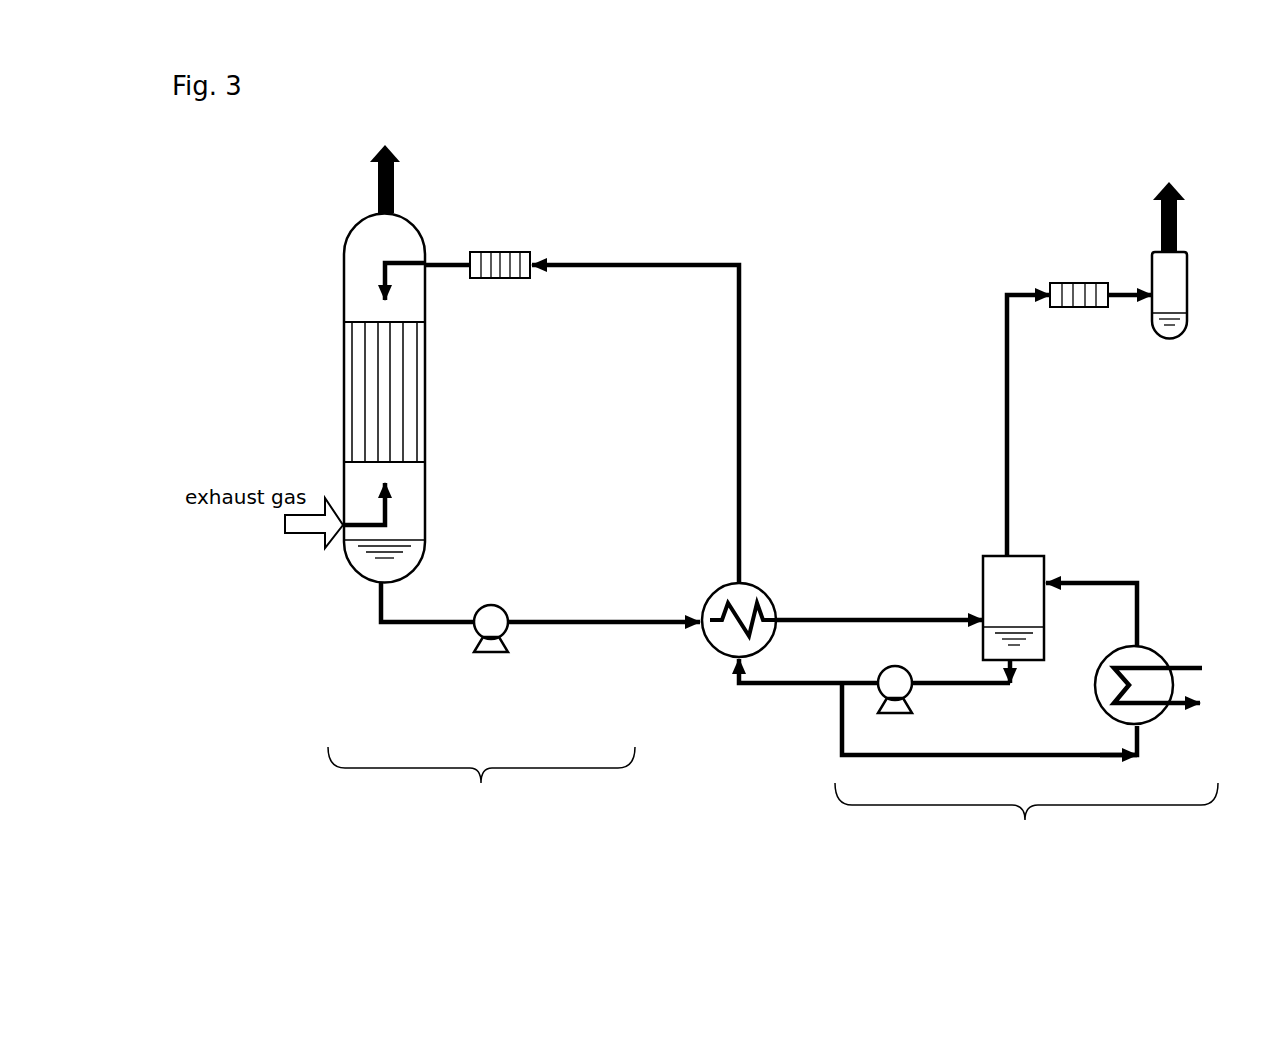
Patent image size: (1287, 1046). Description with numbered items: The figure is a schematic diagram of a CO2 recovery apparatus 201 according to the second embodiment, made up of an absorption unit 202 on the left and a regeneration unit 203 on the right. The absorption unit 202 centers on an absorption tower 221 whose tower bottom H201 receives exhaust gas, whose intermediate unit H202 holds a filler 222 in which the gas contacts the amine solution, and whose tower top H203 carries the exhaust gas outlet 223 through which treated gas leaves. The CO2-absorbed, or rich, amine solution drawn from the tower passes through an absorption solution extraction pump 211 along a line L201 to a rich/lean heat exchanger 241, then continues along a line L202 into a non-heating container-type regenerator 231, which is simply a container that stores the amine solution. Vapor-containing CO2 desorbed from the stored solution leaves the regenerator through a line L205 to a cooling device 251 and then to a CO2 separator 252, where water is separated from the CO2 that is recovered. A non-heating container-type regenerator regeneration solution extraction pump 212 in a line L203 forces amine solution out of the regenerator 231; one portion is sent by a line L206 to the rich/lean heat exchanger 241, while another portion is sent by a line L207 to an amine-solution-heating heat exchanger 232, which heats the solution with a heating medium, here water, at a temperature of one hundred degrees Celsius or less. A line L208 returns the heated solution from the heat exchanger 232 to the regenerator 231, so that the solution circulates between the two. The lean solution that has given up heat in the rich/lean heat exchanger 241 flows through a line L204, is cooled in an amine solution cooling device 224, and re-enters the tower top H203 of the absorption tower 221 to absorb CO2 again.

The CO2 recovery apparatus 201 is at (253, 262).
The absorption unit 202 is at (481, 783).
The regeneration unit 203 is at (1026, 819).
The absorption solution extraction pump 211 is at (493, 655).
The non-heating container-type regenerator regeneration solution extraction pump 212 is at (898, 716).
The absorption tower 221 is at (344, 350).
The filler 222 is at (410, 411).
The exhaust gas outlet 223 is at (387, 216).
The amine solution cooling device 224 is at (496, 281).
The non-heating container-type regenerator 231 is at (1035, 554).
The amine-solution-heating heat exchanger 232 is at (1149, 651).
The rich/lean heat exchanger 241 is at (715, 590).
The cooling device 251 is at (1082, 281).
The CO2 separator 252 is at (1188, 278).
The tower bottom H201 is at (427, 522).
The intermediate unit H202 is at (427, 380).
The tower top H203 is at (344, 282).
The line for CO2-absorbed amine solution L201 is at (556, 626).
The line for CO2-absorbed amine solution L202 is at (891, 617).
The line for CO2-desorbed amine solution L203 is at (976, 687).
The line for CO2-desorbed amine solution L204 is at (568, 269).
The line for vapor-containing CO2 L205 is at (1010, 446).
The line for CO2-desorbed amine solution L206 is at (791, 687).
The line for CO2-desorbed amine solution L207 is at (1001, 758).
The line for CO2-desorbed amine solution L208 is at (1110, 581).